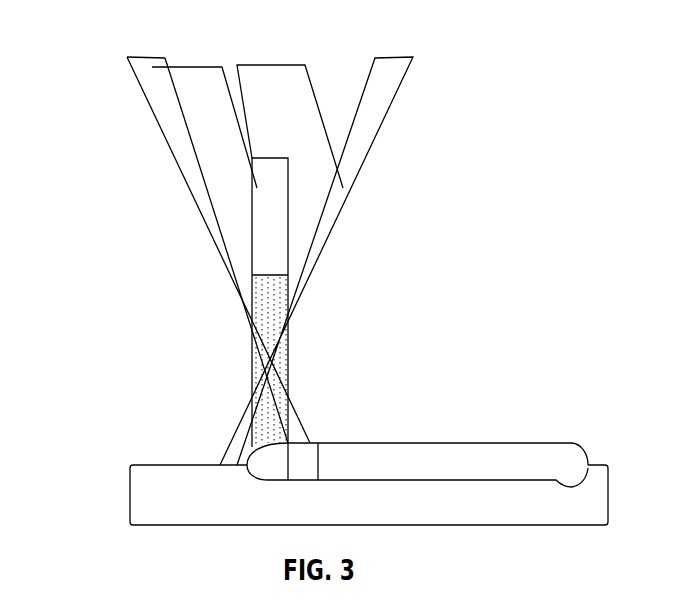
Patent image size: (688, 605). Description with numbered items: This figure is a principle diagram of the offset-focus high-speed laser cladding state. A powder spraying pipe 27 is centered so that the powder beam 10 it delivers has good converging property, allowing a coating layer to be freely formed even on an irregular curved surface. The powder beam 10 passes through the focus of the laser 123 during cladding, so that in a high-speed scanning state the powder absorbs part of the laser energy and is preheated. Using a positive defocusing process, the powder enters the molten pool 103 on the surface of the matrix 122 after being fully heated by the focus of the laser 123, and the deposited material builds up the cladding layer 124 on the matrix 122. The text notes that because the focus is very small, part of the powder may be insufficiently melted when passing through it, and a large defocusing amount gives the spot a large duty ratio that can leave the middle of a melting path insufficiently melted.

The powder beam 10 is at (255, 357).
The powder spraying pipe 27 is at (218, 229).
The molten pool 103 is at (272, 463).
The matrix 122 is at (198, 492).
The laser 123 is at (316, 240).
The cladding layer 124 is at (408, 462).